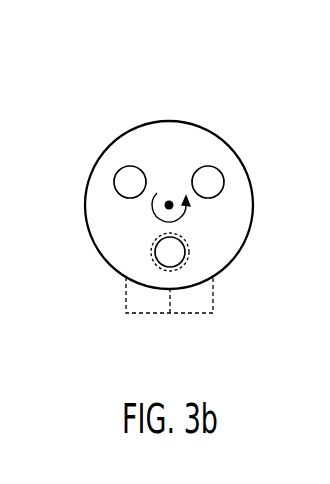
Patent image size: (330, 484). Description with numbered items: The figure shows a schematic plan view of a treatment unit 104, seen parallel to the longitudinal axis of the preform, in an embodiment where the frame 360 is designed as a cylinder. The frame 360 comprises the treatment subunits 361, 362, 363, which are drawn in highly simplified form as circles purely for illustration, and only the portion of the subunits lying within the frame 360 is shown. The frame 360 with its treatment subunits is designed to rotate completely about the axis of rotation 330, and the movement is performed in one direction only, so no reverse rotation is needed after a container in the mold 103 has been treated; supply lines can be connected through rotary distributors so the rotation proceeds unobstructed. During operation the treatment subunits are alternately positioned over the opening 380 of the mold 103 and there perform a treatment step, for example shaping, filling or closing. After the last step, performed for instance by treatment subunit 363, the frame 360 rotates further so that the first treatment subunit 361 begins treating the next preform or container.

The treatment unit 104 is at (247, 112).
The axis of rotation 330 is at (169, 202).
The frame 360 is at (253, 205).
The treatment subunit 361 is at (213, 173).
The treatment subunit 362 is at (163, 252).
The treatment subunit 363 is at (119, 177).
The opening 380 is at (185, 250).
The mold 103 is at (135, 316).